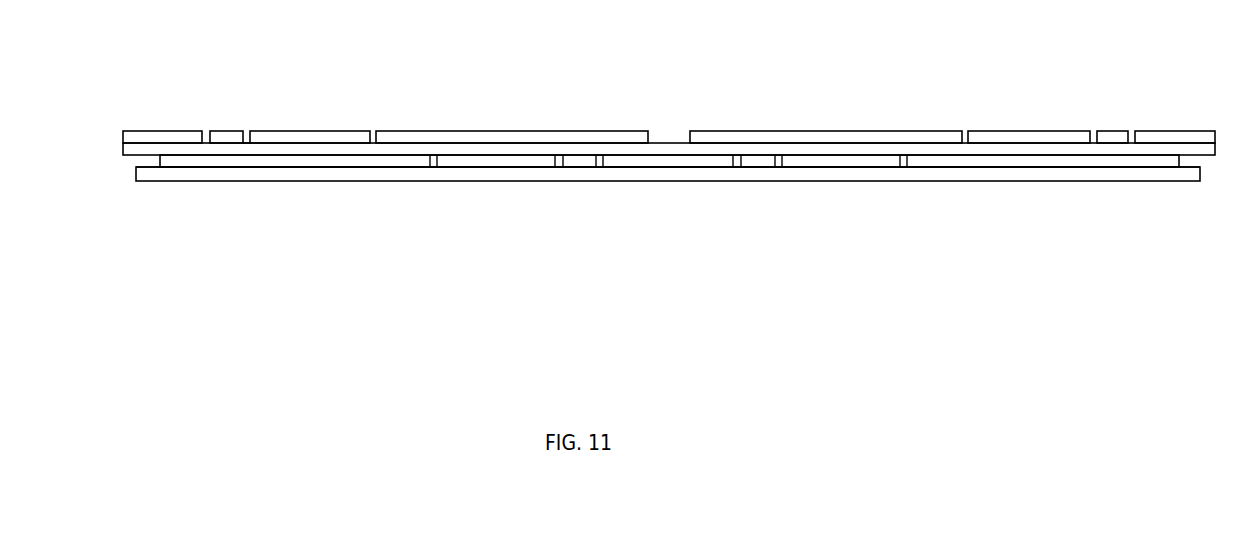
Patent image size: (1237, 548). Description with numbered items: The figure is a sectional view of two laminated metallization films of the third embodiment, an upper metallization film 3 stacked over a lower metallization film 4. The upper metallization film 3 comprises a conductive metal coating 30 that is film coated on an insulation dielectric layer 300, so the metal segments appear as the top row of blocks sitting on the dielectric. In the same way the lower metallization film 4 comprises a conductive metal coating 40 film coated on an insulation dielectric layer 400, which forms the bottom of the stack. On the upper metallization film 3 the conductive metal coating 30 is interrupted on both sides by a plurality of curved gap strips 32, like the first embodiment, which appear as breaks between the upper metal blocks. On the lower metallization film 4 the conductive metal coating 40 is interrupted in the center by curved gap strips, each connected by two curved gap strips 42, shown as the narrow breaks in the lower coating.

The upper metallization film 3 is at (747, 142).
The conductive metal coating 30 is at (163, 132).
The curved gap strips 32 is at (250, 137).
The insulation dielectric layer 300 is at (562, 152).
The lower metallization film 4 is at (695, 167).
The conductive metal coating 40 is at (332, 163).
The insulation dielectric layer 400 is at (502, 173).
The curved gap strips 42 is at (905, 165).